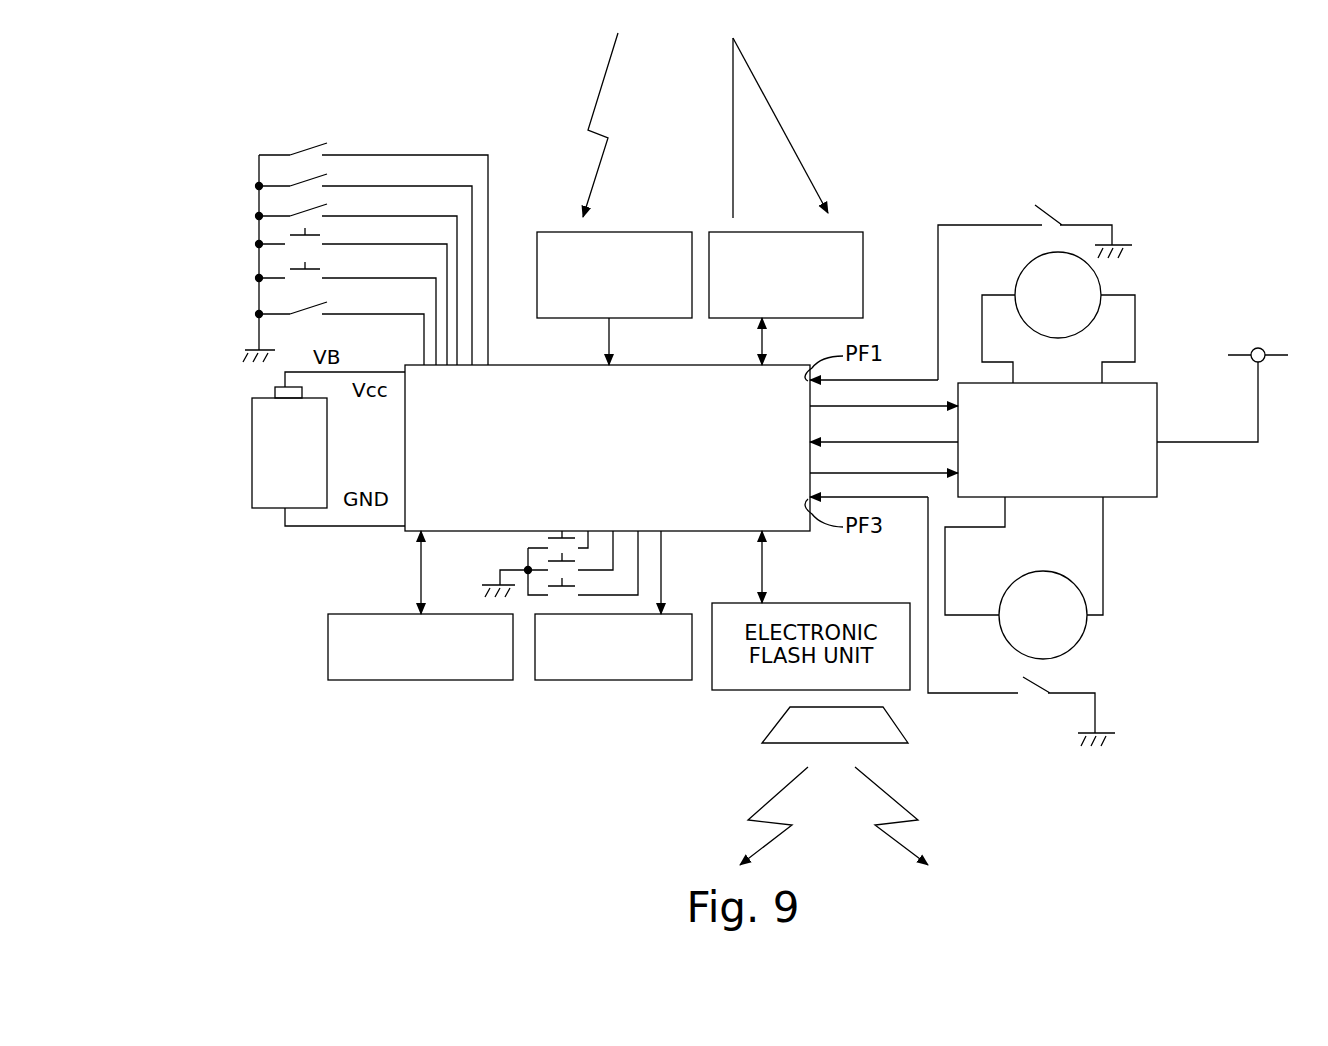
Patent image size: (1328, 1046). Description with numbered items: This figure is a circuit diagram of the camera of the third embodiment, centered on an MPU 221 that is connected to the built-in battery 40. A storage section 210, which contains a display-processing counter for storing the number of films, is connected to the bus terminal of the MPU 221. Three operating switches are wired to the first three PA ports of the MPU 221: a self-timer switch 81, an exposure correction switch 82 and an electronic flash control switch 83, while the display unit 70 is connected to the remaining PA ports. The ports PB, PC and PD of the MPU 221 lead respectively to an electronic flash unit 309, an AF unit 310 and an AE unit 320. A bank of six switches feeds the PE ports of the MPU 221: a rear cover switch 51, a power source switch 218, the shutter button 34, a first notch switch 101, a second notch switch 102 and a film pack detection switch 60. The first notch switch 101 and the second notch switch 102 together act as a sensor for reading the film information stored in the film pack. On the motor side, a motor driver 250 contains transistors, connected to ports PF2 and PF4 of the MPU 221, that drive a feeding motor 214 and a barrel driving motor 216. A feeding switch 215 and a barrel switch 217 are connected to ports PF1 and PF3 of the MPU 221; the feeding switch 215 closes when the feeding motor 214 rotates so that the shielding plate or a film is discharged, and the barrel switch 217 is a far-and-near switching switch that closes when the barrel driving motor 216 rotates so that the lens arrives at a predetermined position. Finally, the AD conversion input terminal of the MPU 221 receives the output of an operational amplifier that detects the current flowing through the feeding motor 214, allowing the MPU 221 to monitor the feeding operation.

The film pack detection switch 60 is at (290, 148).
The second notch switch 102 is at (287, 170).
The first notch switch 101 is at (287, 200).
The shutter button 34 is at (287, 231).
The power source switch 218 is at (287, 264).
The rear cover switch 51 is at (287, 298).
The built-in battery 40 is at (252, 428).
The MPU 221 is at (405, 447).
The AE unit 320 is at (672, 232).
The AF unit 310 is at (860, 232).
The feeding switch 215 is at (1076, 211).
The feeding motor 214 is at (1098, 270).
The motor driver 250 is at (1162, 472).
The barrel driving motor 216 is at (1080, 640).
The barrel switch 217 is at (1068, 680).
The self-timer switch 81 is at (545, 547).
The exposure correction switch 82 is at (535, 571).
The electronic flash control switch 83 is at (540, 592).
The storage section 210 is at (423, 680).
The display unit 70 is at (614, 680).
The electronic flash unit 309 is at (722, 690).